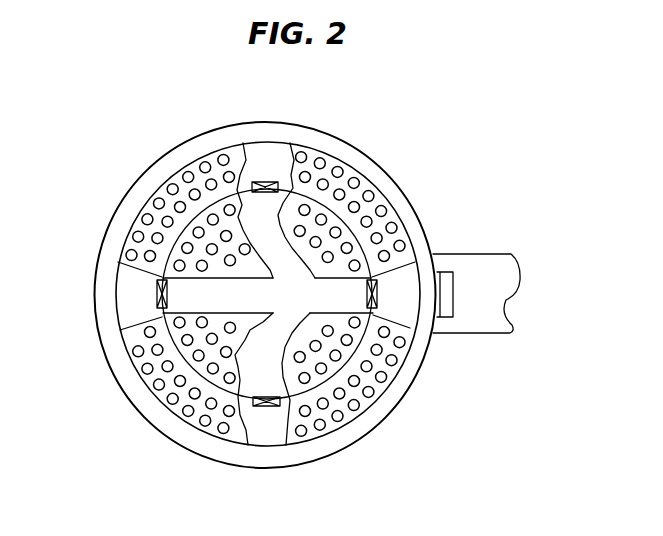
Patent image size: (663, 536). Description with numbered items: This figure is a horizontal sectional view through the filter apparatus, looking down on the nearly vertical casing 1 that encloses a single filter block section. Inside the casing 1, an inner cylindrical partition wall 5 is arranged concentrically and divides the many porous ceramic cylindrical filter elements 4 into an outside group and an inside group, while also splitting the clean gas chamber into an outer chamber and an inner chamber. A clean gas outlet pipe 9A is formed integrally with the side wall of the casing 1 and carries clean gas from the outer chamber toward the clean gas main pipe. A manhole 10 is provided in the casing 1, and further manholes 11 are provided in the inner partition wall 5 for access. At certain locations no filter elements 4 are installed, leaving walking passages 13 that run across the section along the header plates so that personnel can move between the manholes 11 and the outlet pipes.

The casing 1 is at (405, 207).
The filter elements 4 is at (370, 200).
The inner cylindrical partition wall 5 is at (332, 208).
The clean gas outlet pipe 9A is at (478, 334).
The manhole 10 is at (439, 272).
The manhole 11 is at (268, 182).
The walking passage 13 is at (190, 297).